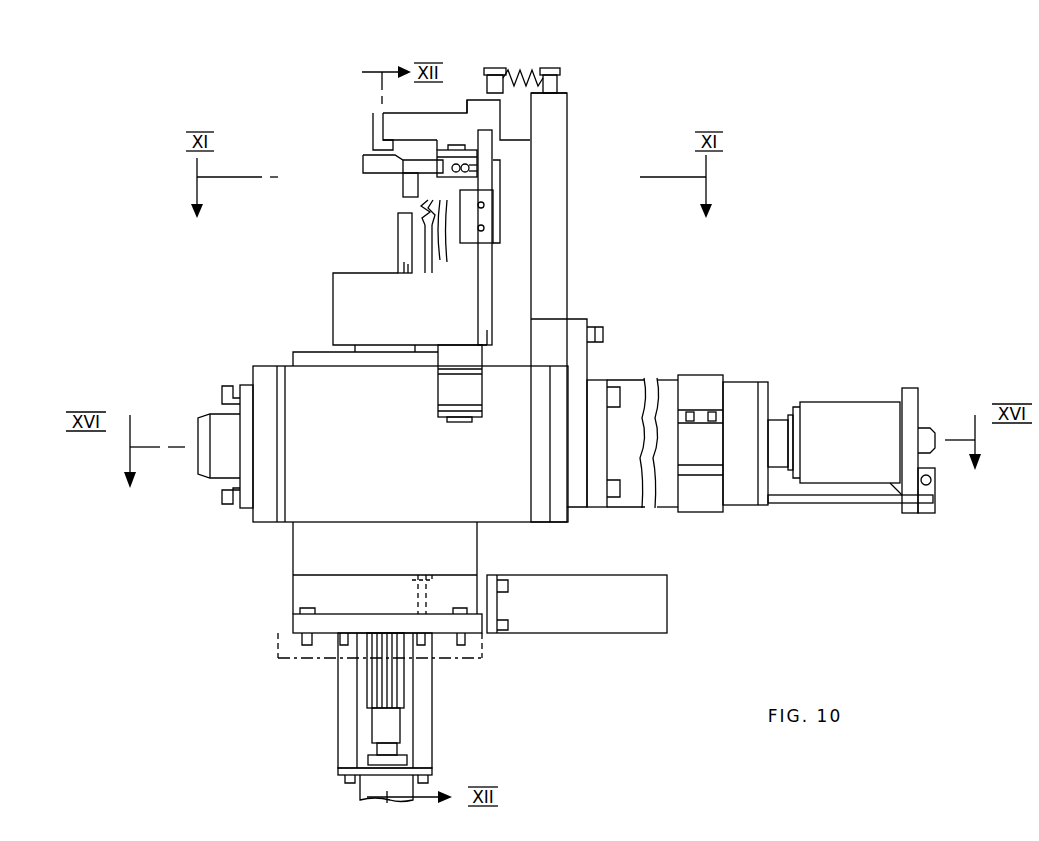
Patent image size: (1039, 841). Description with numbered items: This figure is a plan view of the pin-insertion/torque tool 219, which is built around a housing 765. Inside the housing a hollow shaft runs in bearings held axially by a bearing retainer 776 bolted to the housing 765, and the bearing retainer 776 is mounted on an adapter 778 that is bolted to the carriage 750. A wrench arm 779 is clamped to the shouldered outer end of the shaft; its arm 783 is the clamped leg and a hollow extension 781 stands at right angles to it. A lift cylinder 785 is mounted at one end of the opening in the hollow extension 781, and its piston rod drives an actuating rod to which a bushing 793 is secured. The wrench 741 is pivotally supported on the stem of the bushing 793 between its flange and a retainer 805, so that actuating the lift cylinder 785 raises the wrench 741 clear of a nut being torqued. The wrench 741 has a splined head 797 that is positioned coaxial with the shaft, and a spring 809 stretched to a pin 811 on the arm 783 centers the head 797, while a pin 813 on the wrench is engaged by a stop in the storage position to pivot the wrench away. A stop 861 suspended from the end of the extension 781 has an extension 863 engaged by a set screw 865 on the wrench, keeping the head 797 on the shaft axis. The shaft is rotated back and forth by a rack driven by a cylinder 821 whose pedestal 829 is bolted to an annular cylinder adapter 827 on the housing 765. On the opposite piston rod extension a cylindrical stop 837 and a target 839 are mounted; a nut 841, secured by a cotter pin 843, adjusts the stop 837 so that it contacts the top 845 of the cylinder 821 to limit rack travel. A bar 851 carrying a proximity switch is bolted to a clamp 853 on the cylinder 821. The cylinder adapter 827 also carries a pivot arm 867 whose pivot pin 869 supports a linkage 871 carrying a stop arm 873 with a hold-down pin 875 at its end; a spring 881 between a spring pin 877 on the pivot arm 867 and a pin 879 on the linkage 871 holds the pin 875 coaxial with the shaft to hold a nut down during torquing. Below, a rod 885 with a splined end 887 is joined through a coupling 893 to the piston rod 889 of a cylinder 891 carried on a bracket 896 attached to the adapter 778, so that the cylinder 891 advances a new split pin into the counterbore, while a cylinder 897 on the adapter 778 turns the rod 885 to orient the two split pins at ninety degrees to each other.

The pin-insertion/torque tool 219 is at (252, 262).
The wrench 741 is at (370, 164).
The carriage 750 is at (278, 652).
The housing 765 is at (306, 385).
The bearing retainer 776 is at (293, 555).
The adapter 778 is at (293, 598).
The wrench arm 779 is at (468, 328).
The hollow extension 781 is at (492, 262).
The arm 783 is at (345, 302).
The lift cylinder 785 is at (452, 393).
The bushing 793 is at (444, 244).
The splined head 797 is at (363, 164).
The retainer 805 is at (437, 152).
The spring 809 is at (430, 274).
The pin 811 is at (398, 254).
The pin 813 is at (418, 214).
The cylinder 821 is at (663, 380).
The annular cylinder adapter 827 is at (577, 500).
The pedestal 829 is at (605, 505).
The cylindrical stop 837 is at (848, 402).
The target 839 is at (908, 390).
The nut 841 is at (937, 480).
The cotter pin 843 is at (933, 425).
The top of cylinder 845 is at (770, 392).
The bar 851 is at (830, 503).
The clamp 853 is at (703, 380).
The stop 861 is at (500, 243).
The extension 863 is at (480, 160).
The set screw 865 is at (470, 170).
The pivot arm 867 is at (553, 239).
The pivot pin 869 is at (600, 327).
The linkage 871 is at (532, 120).
The stop arm 873 is at (390, 120).
The hold-down pin 875 is at (373, 140).
The spring pin 877 is at (540, 74).
The pin 879 is at (467, 100).
The spring 881 is at (558, 78).
The rod 885 is at (416, 683).
The splined end 887 is at (375, 680).
The piston rod 889 is at (405, 759).
The cylinder 891 is at (362, 788).
The coupling 893 is at (393, 722).
The bracket 896 is at (338, 712).
The cylinder 897 is at (608, 633).